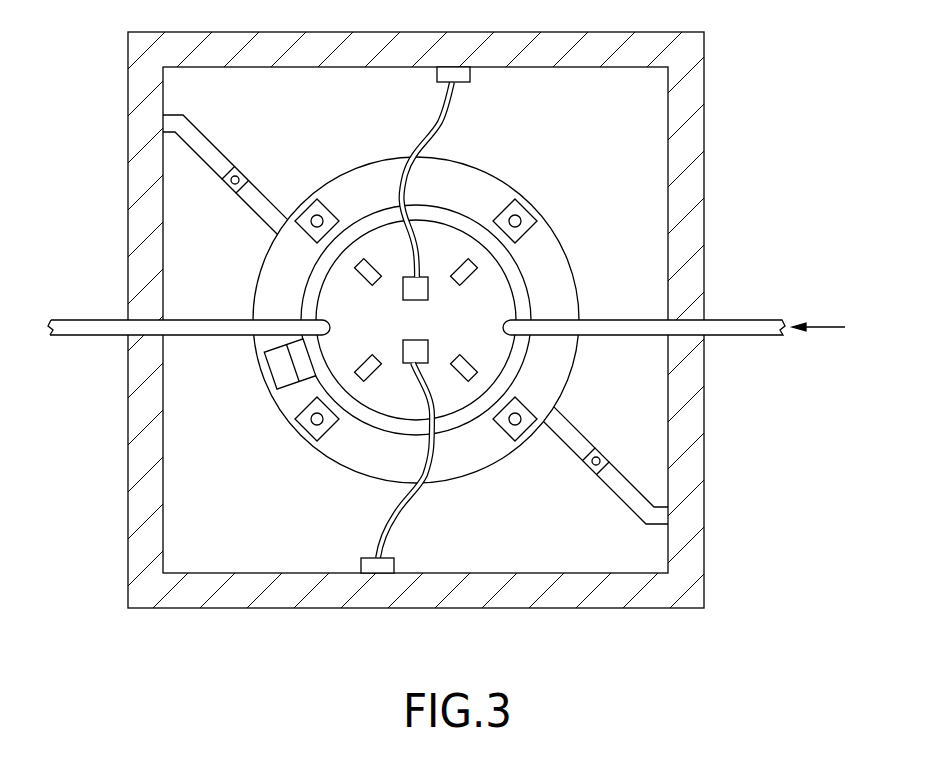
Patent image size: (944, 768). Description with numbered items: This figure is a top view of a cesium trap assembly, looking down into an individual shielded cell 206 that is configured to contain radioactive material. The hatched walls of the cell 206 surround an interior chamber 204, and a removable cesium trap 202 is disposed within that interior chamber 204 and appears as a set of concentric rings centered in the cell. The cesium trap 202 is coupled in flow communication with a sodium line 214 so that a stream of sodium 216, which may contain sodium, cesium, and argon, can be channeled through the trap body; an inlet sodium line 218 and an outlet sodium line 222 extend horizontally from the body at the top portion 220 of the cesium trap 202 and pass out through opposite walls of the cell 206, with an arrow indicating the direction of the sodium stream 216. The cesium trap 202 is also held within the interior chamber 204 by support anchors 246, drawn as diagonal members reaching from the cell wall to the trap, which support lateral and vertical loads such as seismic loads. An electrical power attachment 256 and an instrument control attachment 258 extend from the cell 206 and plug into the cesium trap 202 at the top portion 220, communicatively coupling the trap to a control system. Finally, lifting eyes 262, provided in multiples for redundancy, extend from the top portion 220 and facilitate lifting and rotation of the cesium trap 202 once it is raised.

The cesium trap 202 is at (573, 368).
The interior chamber 204 is at (640, 147).
The shielded cell 206 is at (705, 173).
The sodium line 214 is at (210, 320).
The stream of sodium 216 is at (826, 327).
The inlet sodium line 218 is at (738, 320).
The top portion 220 is at (551, 257).
The outlet sodium line 222 is at (58, 320).
The support anchor 246 is at (225, 151).
The electrical power attachment 256 is at (408, 506).
The instrument control attachment 258 is at (441, 121).
The lifting eye 262 is at (465, 358).